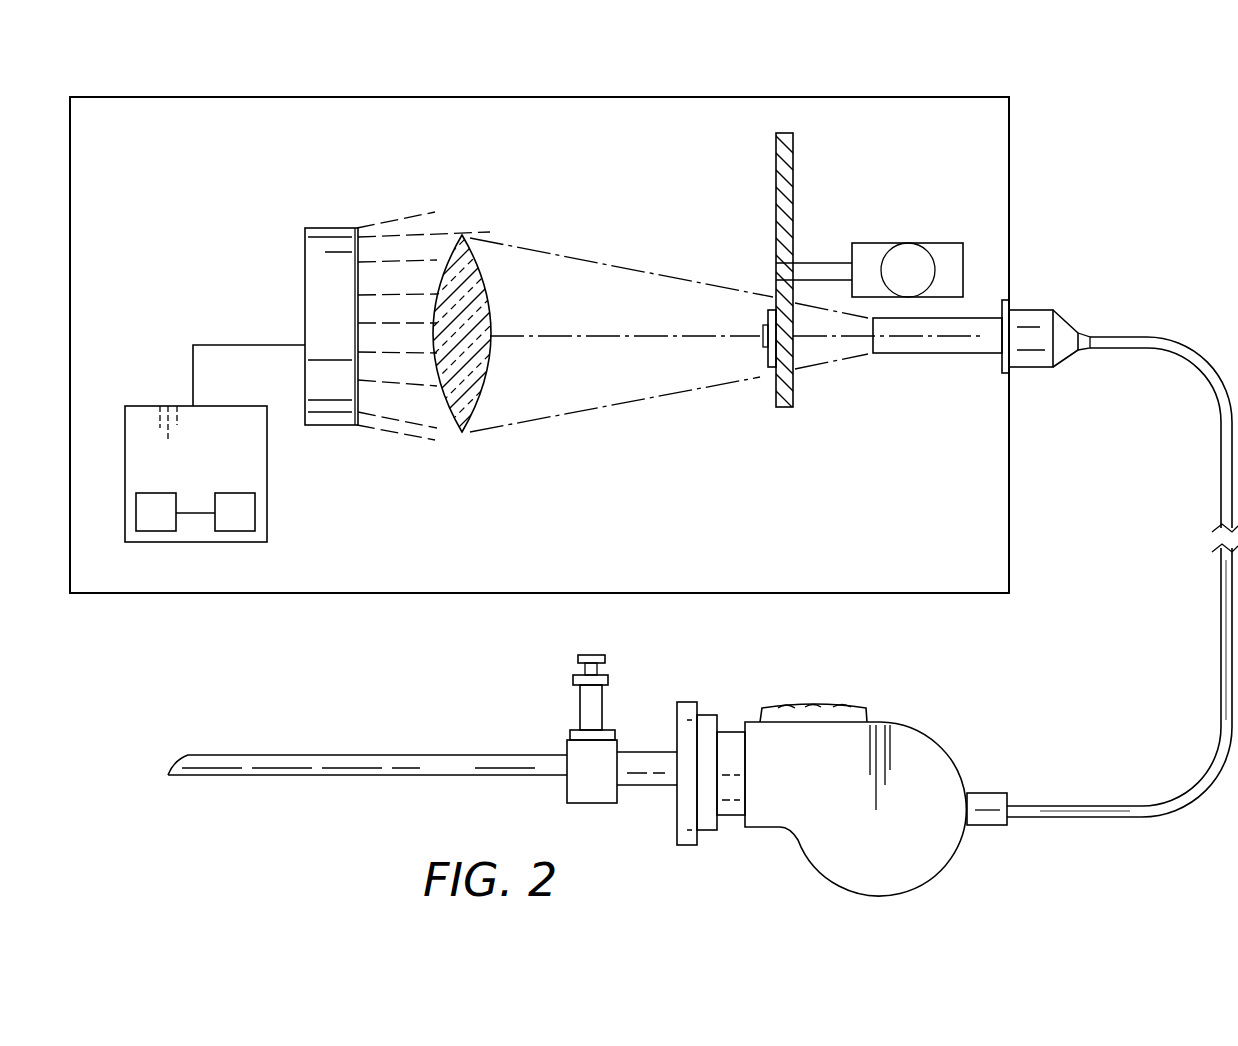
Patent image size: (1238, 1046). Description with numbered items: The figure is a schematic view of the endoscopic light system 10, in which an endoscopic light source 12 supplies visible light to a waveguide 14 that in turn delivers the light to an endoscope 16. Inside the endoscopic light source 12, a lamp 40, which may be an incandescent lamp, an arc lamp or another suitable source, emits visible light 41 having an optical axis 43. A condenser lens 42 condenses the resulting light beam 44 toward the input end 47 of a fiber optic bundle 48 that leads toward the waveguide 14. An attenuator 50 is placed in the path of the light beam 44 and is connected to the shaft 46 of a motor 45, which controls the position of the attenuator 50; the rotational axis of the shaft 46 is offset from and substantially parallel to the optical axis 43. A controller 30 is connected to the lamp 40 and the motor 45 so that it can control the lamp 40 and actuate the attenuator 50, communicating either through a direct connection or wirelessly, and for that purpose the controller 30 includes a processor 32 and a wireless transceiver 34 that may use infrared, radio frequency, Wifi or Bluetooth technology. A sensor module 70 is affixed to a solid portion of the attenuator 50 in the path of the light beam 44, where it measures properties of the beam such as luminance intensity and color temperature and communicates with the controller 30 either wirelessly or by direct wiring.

The endoscopic light system 10 is at (331, 70).
The endoscopic light source 12 is at (540, 97).
The waveguide 14 is at (1220, 432).
The endoscope 16 is at (792, 838).
The controller 30 is at (267, 463).
The processor 32 is at (147, 531).
The wireless transceiver 34 is at (229, 531).
The lamp 40 is at (331, 228).
The visible light 41 is at (400, 216).
The condenser lens 42 is at (462, 235).
The optical axis 43 is at (530, 333).
The light beam 44 is at (640, 271).
The motor 45 is at (875, 243).
The shaft 46 is at (823, 263).
The input end 47 is at (868, 346).
The fiber optic bundle 48 is at (955, 353).
The attenuator 50 is at (793, 175).
The sensor module 70 is at (760, 353).